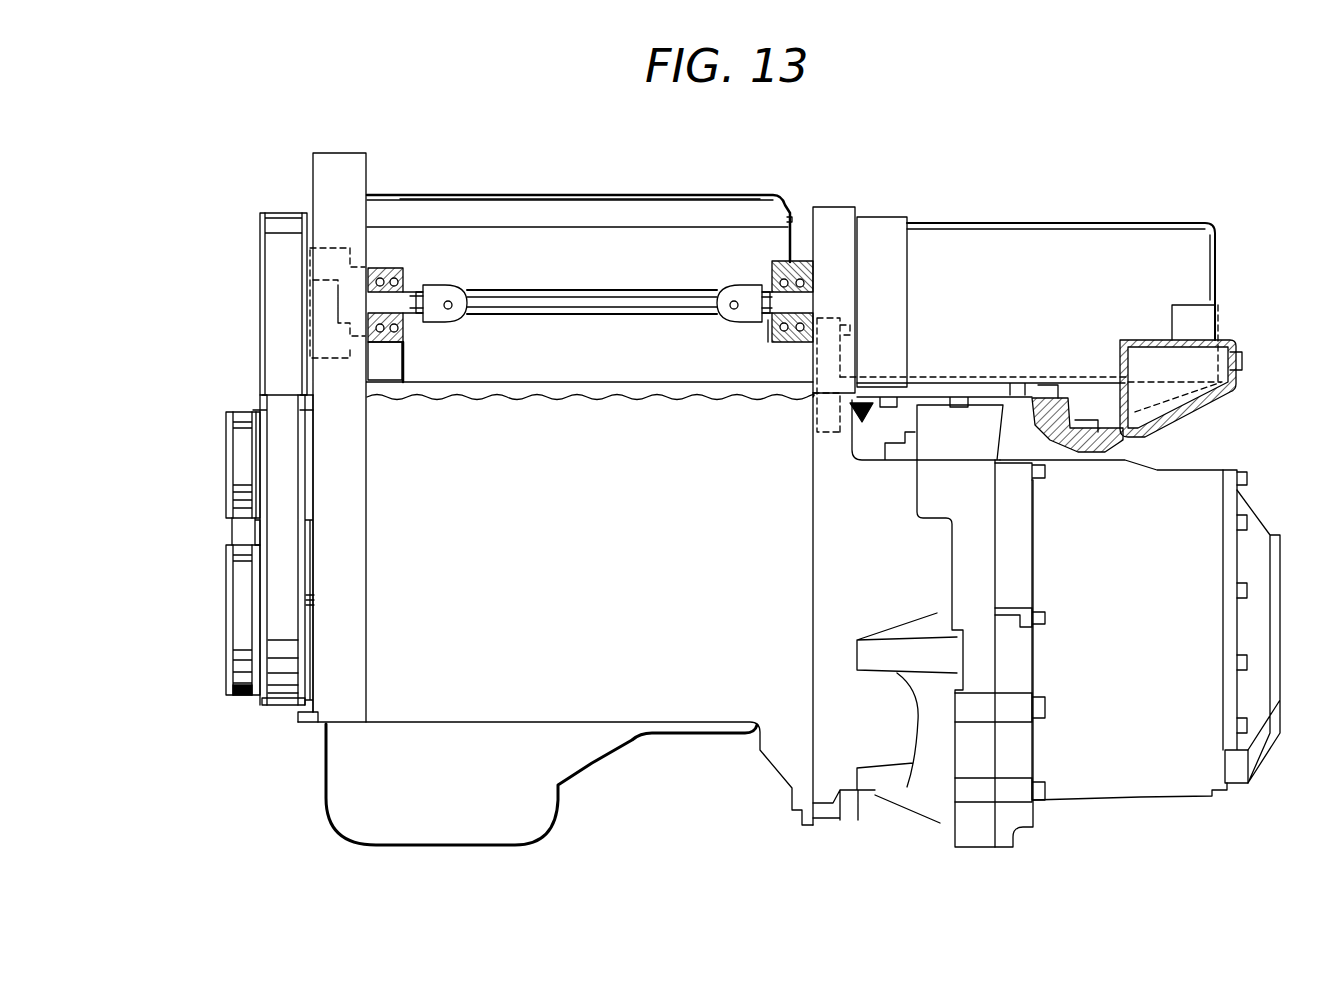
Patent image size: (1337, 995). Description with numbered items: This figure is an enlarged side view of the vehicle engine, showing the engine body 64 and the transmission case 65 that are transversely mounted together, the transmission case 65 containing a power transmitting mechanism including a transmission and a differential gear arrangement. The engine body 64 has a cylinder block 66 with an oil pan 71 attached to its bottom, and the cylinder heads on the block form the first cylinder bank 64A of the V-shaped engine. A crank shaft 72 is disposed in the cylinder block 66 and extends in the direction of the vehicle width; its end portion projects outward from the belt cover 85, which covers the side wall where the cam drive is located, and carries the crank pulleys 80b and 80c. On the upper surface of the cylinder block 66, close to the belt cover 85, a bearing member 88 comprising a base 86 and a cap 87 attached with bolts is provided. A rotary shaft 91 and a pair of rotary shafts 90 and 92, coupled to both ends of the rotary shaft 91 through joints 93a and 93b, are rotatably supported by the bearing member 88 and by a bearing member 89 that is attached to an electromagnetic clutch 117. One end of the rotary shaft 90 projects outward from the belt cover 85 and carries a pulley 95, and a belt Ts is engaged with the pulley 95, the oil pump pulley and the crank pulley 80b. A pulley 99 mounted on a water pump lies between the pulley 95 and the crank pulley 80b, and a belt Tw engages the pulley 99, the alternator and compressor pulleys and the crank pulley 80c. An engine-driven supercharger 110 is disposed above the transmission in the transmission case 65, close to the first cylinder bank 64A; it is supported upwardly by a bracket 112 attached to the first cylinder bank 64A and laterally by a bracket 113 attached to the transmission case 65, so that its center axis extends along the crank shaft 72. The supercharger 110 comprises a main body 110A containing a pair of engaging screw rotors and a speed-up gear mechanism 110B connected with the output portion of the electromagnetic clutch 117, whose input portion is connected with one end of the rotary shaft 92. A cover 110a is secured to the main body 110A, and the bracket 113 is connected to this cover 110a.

The engine body 64 is at (442, 190).
The first cylinder bank 64A is at (563, 205).
The transmission case 65 is at (1174, 790).
The cylinder block 66 is at (725, 722).
The oil pan 71 is at (345, 813).
The crank shaft 72 is at (312, 592).
The crank pulley 80b is at (305, 673).
The crank pulley 80c is at (238, 602).
The belt cover 85 is at (300, 710).
The base 86 is at (388, 378).
The cap 87 is at (382, 267).
The bearing member 88 is at (405, 279).
The bearing member 89 is at (770, 262).
The rotary shaft 90 is at (410, 318).
The rotary shaft 91 is at (573, 300).
The rotary shaft 92 is at (767, 303).
The joint 93a is at (447, 318).
The joint 93b is at (740, 318).
The pulley 95 is at (262, 277).
The pulley 99 is at (238, 460).
The engine-driven supercharger 110 is at (1020, 152).
The main body 110A is at (992, 232).
The speed-up gear mechanism 110B is at (892, 222).
The cover 110a is at (1213, 323).
The bracket 112 is at (872, 408).
The bracket 113 is at (1232, 392).
The electromagnetic clutch 117 is at (832, 215).
The belt Ts is at (283, 230).
The belt Tw is at (237, 533).